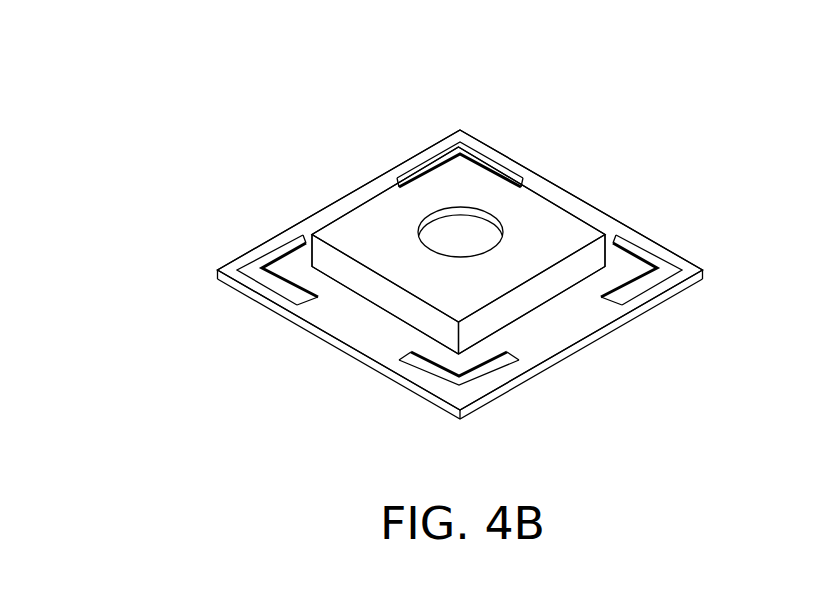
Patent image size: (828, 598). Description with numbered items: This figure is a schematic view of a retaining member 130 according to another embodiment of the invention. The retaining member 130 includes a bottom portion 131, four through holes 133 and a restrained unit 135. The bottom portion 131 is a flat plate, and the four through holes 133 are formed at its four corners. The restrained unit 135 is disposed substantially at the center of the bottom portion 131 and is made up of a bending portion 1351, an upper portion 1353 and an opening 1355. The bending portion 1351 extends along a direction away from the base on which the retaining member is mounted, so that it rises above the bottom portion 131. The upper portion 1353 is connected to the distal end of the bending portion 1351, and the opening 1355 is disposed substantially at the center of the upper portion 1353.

The retaining member 130 is at (160, 44).
The bottom portion 131 is at (247, 259).
The through holes 133 is at (226, 274).
The restrained unit 135 is at (359, 212).
The bending portion 1351 is at (388, 296).
The upper portion 1353 is at (390, 228).
The opening 1355 is at (438, 228).